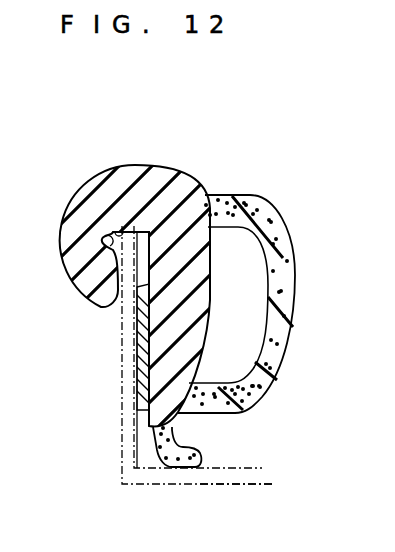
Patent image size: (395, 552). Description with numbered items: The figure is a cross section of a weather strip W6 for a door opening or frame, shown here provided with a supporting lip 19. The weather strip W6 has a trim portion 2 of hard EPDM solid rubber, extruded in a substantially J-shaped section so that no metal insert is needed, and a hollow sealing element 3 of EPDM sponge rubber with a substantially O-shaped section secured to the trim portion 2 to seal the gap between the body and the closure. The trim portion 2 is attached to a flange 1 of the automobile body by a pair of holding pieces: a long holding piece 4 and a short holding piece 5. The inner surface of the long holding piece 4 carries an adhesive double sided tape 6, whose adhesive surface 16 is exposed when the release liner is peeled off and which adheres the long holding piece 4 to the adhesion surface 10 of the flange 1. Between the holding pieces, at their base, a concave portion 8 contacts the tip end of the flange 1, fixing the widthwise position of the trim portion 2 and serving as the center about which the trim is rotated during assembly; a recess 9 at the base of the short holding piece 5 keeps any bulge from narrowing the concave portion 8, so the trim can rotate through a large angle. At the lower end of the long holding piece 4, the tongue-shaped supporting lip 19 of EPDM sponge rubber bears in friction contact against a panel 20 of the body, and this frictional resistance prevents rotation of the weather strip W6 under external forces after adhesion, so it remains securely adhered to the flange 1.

The flange 1 is at (121, 392).
The trim portion 2 is at (137, 165).
The hollow sealing element 3 is at (293, 348).
The long holding piece 4 is at (207, 297).
The short holding piece 5 is at (72, 268).
The adhesive double sided tape 6 is at (136, 393).
The concave portion 8 is at (118, 232).
The recess 9 is at (102, 240).
The adhesion surface 10 is at (146, 343).
The adhesive surface 16 is at (136, 407).
The supporting lip 19 is at (201, 456).
The panel 20 is at (226, 488).
The weather strip W6 is at (200, 184).